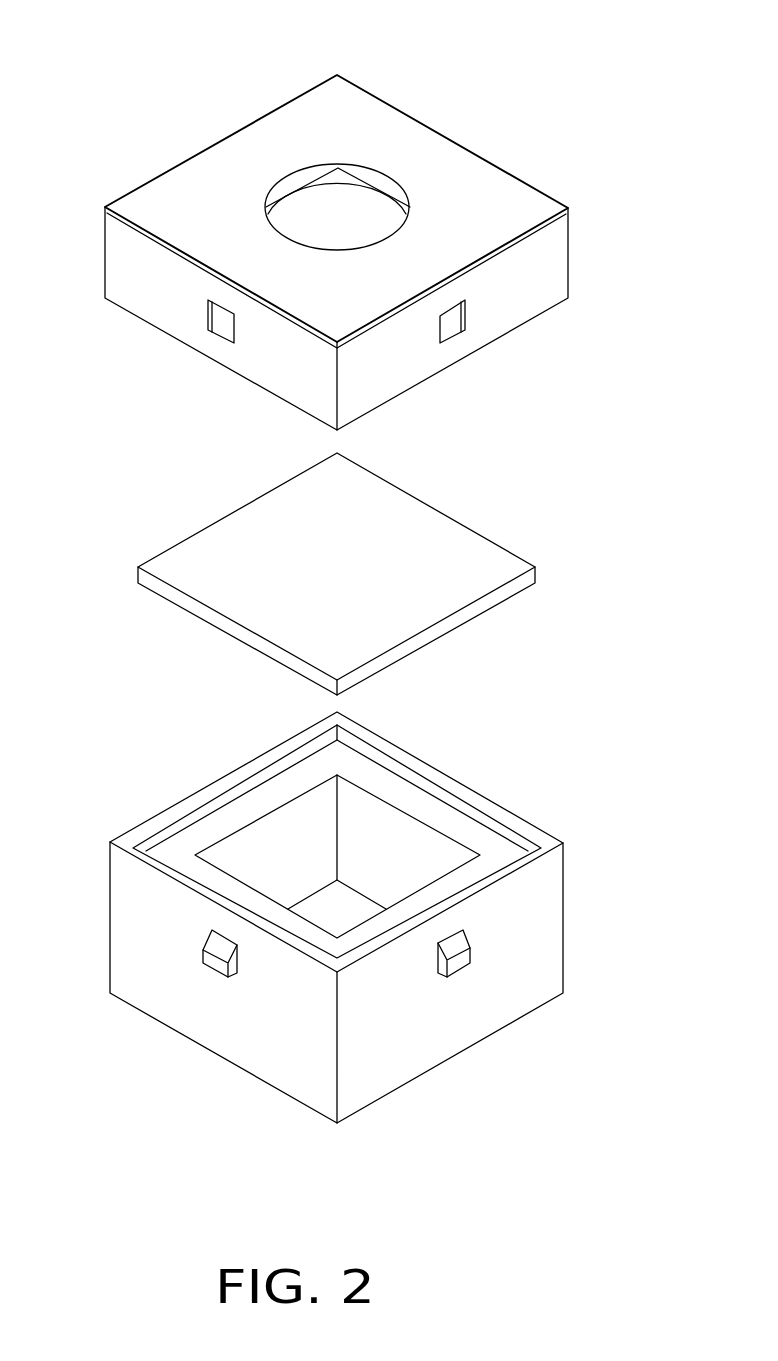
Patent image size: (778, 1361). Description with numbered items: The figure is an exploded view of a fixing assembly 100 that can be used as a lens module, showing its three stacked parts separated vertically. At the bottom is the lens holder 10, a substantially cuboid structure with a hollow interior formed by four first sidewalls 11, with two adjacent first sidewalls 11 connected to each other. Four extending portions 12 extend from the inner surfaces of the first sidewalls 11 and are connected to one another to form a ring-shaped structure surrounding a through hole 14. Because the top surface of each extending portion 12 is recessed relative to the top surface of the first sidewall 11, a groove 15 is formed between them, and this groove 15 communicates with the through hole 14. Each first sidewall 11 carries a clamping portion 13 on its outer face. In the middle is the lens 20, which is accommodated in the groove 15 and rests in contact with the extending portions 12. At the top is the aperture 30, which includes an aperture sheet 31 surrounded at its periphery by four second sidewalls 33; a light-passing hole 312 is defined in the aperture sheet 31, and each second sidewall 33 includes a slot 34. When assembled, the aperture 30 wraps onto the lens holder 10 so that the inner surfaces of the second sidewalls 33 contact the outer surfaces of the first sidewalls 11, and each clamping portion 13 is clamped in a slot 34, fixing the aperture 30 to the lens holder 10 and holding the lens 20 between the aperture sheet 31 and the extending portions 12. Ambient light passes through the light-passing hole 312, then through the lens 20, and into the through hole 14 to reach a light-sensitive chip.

The fixing assembly 100 is at (338, 38).
The lens holder 10 is at (578, 904).
The first sidewall 11 is at (128, 913).
The extending portion 12 is at (258, 798).
The clamping portion 13 is at (218, 963).
The through hole 14 is at (355, 818).
The groove 15 is at (435, 812).
The lens 20 is at (417, 522).
The aperture 30 is at (565, 133).
The aperture sheet 31 is at (498, 207).
The light-passing hole 312 is at (313, 200).
The second sidewall 33 is at (555, 268).
The slot 34 is at (212, 325).